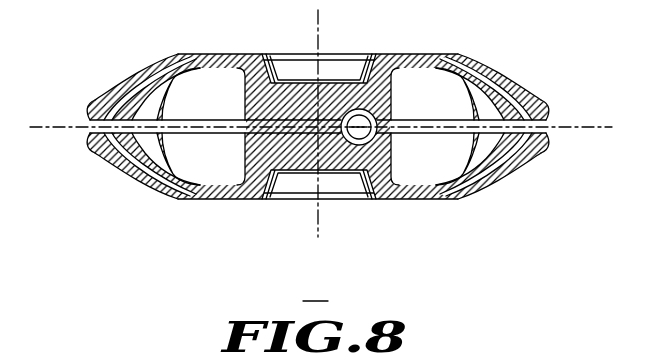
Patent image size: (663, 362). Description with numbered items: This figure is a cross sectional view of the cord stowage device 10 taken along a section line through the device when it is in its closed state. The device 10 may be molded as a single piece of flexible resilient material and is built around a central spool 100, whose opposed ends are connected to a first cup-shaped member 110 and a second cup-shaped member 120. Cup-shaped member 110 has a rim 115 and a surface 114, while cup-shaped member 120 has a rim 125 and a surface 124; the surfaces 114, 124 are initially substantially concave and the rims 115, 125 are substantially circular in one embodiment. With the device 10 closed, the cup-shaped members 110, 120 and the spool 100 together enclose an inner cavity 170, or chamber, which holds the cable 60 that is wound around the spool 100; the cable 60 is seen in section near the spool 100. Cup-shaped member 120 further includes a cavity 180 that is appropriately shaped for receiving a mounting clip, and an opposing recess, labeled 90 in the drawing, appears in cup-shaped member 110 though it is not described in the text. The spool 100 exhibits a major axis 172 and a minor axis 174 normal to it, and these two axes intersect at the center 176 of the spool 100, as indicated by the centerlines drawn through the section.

The cord stowage device 10 is at (318, 178).
The cable 60 is at (370, 140).
The upper retaining cap 90 is at (287, 72).
The spool 100 is at (386, 163).
The cup-shaped member 110 is at (153, 63).
The surface 114 is at (502, 75).
The rim 115 is at (88, 107).
The cup-shaped member 120 is at (114, 168).
The surface 124 is at (502, 178).
The rim 125 is at (84, 145).
The inner cavity 170 is at (199, 153).
The major axis 172 is at (320, 30).
The minor axis 174 is at (588, 131).
The center 176 is at (341, 178).
The cavity 180 is at (316, 178).